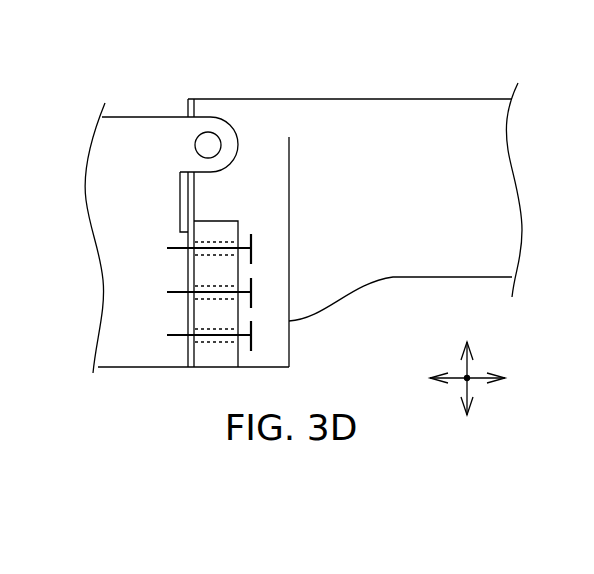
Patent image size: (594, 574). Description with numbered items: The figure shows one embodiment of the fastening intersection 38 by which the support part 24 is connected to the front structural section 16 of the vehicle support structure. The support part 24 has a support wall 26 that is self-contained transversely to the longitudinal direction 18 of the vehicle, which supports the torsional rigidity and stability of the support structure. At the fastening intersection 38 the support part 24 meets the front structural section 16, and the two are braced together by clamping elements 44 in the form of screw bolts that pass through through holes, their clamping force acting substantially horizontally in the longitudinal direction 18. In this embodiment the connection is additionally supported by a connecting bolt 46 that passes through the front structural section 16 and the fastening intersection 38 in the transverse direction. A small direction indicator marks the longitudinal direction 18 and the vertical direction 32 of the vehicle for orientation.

The front structural section 16 is at (117, 203).
The support part 24 is at (377, 97).
The support wall 26 is at (440, 168).
The fastening intersection 38 is at (212, 107).
The clamping elements 44 is at (168, 248).
The connecting bolts 46 is at (195, 138).
The longitudinal direction 18 is at (457, 385).
The vertical direction 32 is at (470, 383).